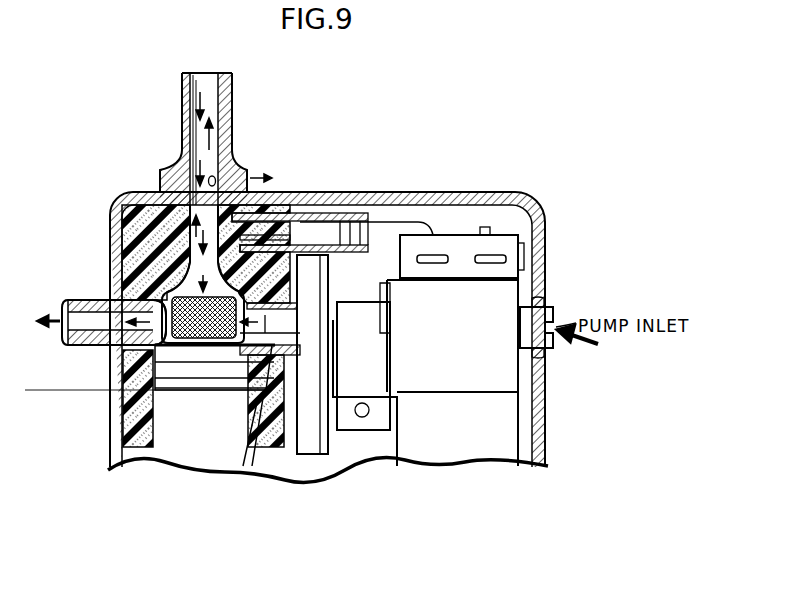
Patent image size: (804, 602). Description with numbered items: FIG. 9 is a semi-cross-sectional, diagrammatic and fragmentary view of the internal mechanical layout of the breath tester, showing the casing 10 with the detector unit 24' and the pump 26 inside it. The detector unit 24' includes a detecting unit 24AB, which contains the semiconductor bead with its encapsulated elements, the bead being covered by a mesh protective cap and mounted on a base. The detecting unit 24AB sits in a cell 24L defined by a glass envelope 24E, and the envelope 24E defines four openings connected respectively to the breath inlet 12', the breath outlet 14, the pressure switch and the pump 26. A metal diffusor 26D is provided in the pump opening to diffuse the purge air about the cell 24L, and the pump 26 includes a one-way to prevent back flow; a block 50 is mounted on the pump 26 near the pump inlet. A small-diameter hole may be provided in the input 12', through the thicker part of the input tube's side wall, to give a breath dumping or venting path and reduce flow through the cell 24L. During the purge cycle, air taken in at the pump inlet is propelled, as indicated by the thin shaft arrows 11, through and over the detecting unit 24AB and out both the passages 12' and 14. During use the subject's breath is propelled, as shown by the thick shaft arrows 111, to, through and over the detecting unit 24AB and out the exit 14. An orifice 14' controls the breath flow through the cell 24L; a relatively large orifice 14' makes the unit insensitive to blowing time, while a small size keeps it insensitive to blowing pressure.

The pump housing 10 is at (403, 193).
The thin shaft arrows 11 is at (218, 146).
The thick shaft arrows 111 is at (198, 101).
The breath inlet 12' is at (220, 139).
The breath outlet 14 is at (98, 331).
The orifice 14' is at (70, 309).
The detector unit 24' is at (128, 318).
The detecting unit 24AB is at (209, 356).
The glass envelope 24E is at (290, 285).
The cell 24L is at (210, 274).
The pump 26 is at (453, 358).
The metal diffusor 26D is at (300, 330).
The pump motor terminal block 50 is at (463, 240).